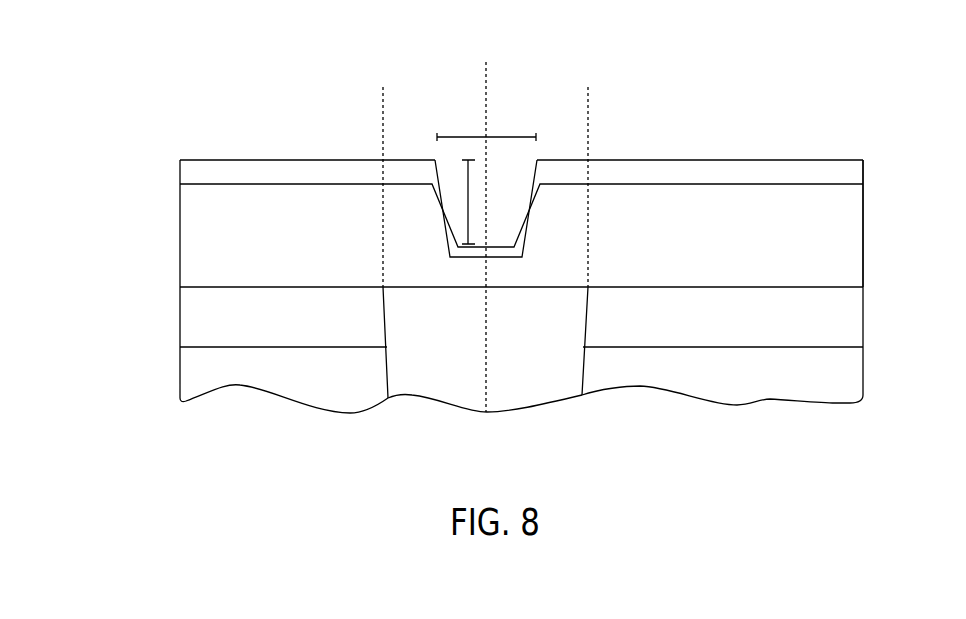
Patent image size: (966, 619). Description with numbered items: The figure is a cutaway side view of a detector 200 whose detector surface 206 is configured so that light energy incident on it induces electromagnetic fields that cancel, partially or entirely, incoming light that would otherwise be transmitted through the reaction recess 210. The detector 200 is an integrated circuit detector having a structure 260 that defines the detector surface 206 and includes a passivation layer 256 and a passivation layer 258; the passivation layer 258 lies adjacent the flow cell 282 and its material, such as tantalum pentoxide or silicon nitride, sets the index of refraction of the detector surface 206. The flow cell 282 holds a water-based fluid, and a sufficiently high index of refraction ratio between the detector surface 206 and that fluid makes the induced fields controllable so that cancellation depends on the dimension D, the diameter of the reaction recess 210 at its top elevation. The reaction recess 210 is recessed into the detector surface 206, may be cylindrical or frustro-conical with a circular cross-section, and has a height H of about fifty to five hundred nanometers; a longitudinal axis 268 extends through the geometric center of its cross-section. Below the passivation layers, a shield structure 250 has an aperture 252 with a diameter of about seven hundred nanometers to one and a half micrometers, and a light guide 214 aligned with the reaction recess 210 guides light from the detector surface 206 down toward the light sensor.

The detector 200 is at (117, 162).
The detector surface 206 is at (823, 158).
The reaction recess 210 is at (515, 165).
The light guide 214 is at (535, 336).
The shield structure 250 is at (852, 323).
The aperture 252 is at (383, 87).
The passivation layer 256 is at (857, 247).
The passivation layer 258 is at (856, 175).
The structure 260 is at (177, 162).
The longitudinal axis 268 is at (486, 105).
The flow cell 282 is at (668, 123).
The dimension D is at (460, 136).
The height H is at (468, 202).